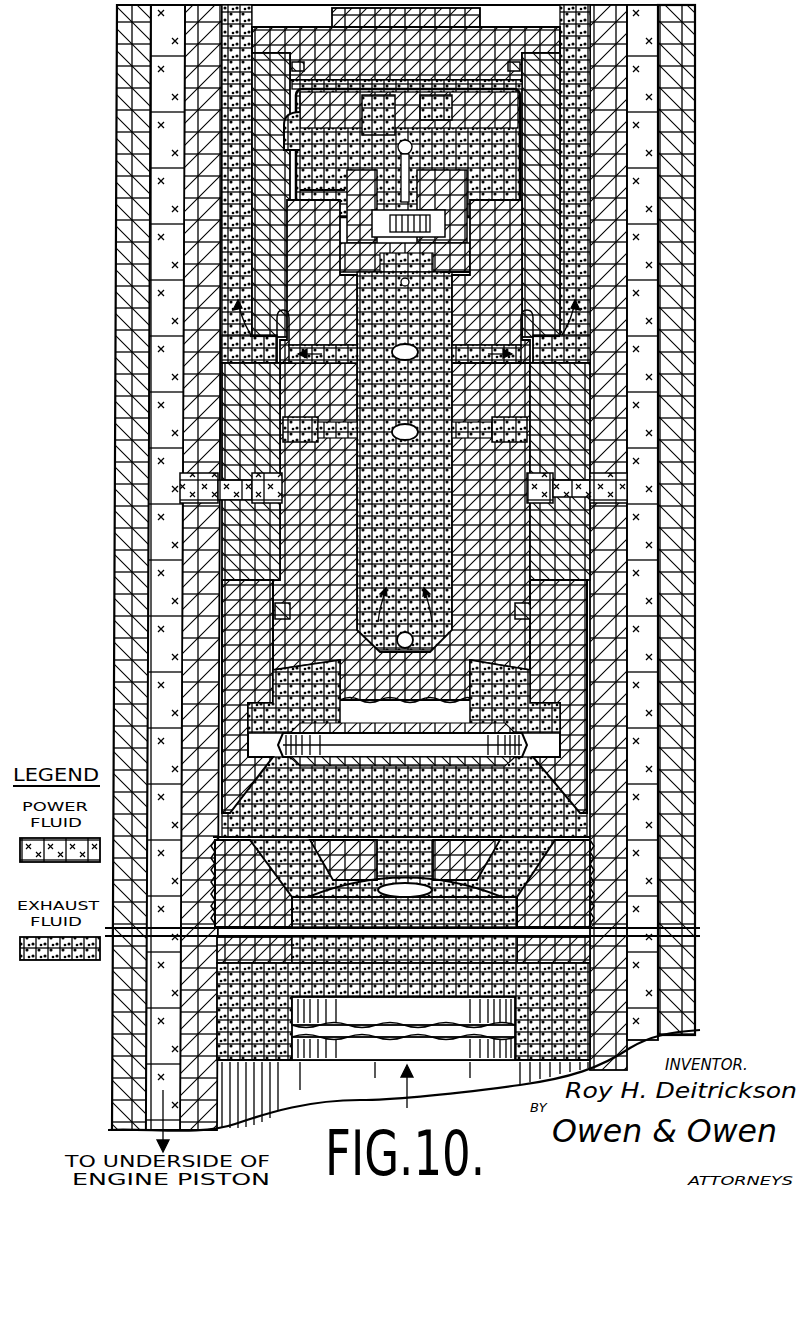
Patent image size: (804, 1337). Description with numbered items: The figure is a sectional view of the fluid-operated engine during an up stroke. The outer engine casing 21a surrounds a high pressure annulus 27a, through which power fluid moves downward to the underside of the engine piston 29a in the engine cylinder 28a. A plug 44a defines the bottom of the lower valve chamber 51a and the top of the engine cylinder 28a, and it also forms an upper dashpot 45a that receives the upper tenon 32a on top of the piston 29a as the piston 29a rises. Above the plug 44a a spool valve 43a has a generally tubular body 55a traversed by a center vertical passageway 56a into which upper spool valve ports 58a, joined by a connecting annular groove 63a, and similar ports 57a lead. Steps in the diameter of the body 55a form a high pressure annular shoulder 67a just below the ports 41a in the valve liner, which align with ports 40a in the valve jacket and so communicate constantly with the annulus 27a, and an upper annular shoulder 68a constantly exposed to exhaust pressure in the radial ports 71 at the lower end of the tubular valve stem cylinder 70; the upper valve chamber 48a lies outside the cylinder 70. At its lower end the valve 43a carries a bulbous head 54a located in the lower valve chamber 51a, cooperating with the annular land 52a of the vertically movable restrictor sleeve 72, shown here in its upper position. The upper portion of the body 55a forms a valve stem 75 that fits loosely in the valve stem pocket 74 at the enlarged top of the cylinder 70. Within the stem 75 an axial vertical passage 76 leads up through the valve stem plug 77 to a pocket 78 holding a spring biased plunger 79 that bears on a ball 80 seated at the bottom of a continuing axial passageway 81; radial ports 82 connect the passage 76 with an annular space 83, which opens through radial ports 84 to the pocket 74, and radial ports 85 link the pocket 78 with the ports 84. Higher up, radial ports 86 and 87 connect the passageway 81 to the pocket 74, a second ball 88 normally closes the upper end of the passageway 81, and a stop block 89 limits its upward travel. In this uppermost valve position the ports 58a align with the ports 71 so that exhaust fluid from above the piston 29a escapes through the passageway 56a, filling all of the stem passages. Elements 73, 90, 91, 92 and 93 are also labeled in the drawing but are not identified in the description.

The engine casing 21a is at (140, 718).
The high pressure annulus 27a is at (162, 347).
The engine cylinder 28a is at (522, 958).
The engine piston 29a is at (240, 1048).
The upper tenon 32a is at (514, 997).
The ports in valve jacket 40a is at (215, 490).
The ports in valve liner 41a is at (162, 497).
The spool valve 43a is at (535, 448).
The plug 44a is at (506, 870).
The upper dashpot 45a is at (506, 915).
The upper valve chamber 48a is at (577, 197).
The lower valve chamber 51a is at (546, 790).
The annular land 52a is at (290, 788).
The bulbous head 54a is at (492, 713).
The spool valve body 55a is at (546, 586).
The center vertical passageway 56a is at (442, 522).
The ports 57a is at (255, 424).
The upper spool valve ports 58a is at (530, 322).
The connecting annular groove 63a is at (289, 364).
The high pressure annular shoulder 67a is at (566, 470).
The upper annular shoulder 68a is at (566, 280).
The tubular valve stem cylinder 70 is at (525, 234).
The radial ports 71 is at (522, 354).
The restrictor sleeve 72 is at (502, 668).
The seal ring 73 is at (530, 610).
The valve stem pocket 74 is at (536, 108).
The valve stem 75 is at (560, 64).
The axial vertical passage 76 is at (340, 266).
The valve stem plug 77 is at (342, 124).
The pocket 78 is at (372, 228).
The spring biased plunger 79 is at (348, 212).
The ball 80 is at (405, 290).
The continuing axial passageway 81 is at (521, 127).
The radial ports 82 is at (348, 250).
The annular space 83 is at (456, 282).
The radial ports 84 is at (560, 208).
The radial ports 85 is at (330, 190).
The radial ports 86 is at (398, 146).
The radial ports 87 is at (306, 132).
The second ball 88 is at (436, 108).
The stop block 89 is at (378, 115).
The housing wall 90 is at (524, 149).
The housing wall 91 is at (266, 225).
The exhaust strip 92 is at (578, 63).
The seal 93 is at (290, 73).